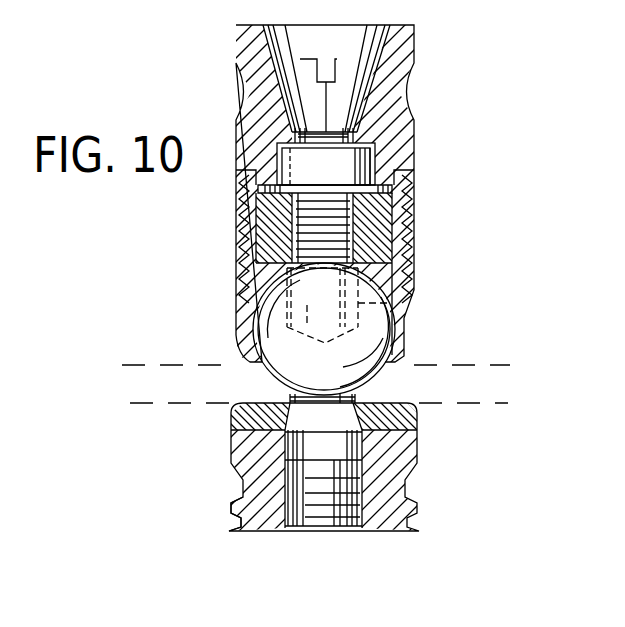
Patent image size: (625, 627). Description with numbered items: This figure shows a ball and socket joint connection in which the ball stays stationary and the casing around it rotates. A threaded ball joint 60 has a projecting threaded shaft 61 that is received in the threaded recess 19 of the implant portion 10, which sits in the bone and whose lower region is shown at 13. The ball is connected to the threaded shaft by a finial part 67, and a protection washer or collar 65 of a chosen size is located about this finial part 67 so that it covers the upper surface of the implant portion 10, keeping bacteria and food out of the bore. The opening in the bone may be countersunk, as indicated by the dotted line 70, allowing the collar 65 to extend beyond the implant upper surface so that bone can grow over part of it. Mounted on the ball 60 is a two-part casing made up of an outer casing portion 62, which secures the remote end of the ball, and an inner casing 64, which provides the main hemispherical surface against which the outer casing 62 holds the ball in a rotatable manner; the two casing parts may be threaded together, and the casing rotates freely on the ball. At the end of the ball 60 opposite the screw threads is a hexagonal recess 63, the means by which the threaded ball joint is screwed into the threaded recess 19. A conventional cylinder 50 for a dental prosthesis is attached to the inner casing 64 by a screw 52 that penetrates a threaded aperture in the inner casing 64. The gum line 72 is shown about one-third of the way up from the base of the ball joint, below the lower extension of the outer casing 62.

The implant portion 10 is at (449, 507).
The lower flange 13 is at (230, 507).
The threaded recess 19 is at (400, 490).
The cylinder 50 is at (402, 110).
The screw 52 is at (350, 85).
The threaded ball joint 60 is at (262, 346).
The projecting threaded shaft 61 is at (410, 460).
The outer casing portion 62 is at (246, 300).
The hexagonal recess 63 is at (408, 302).
The inner casing 64 is at (400, 210).
The protection washer or collar 65 is at (231, 418).
The finial part 67 is at (283, 401).
The dotted line 70 is at (497, 405).
The gum line 72 is at (493, 358).